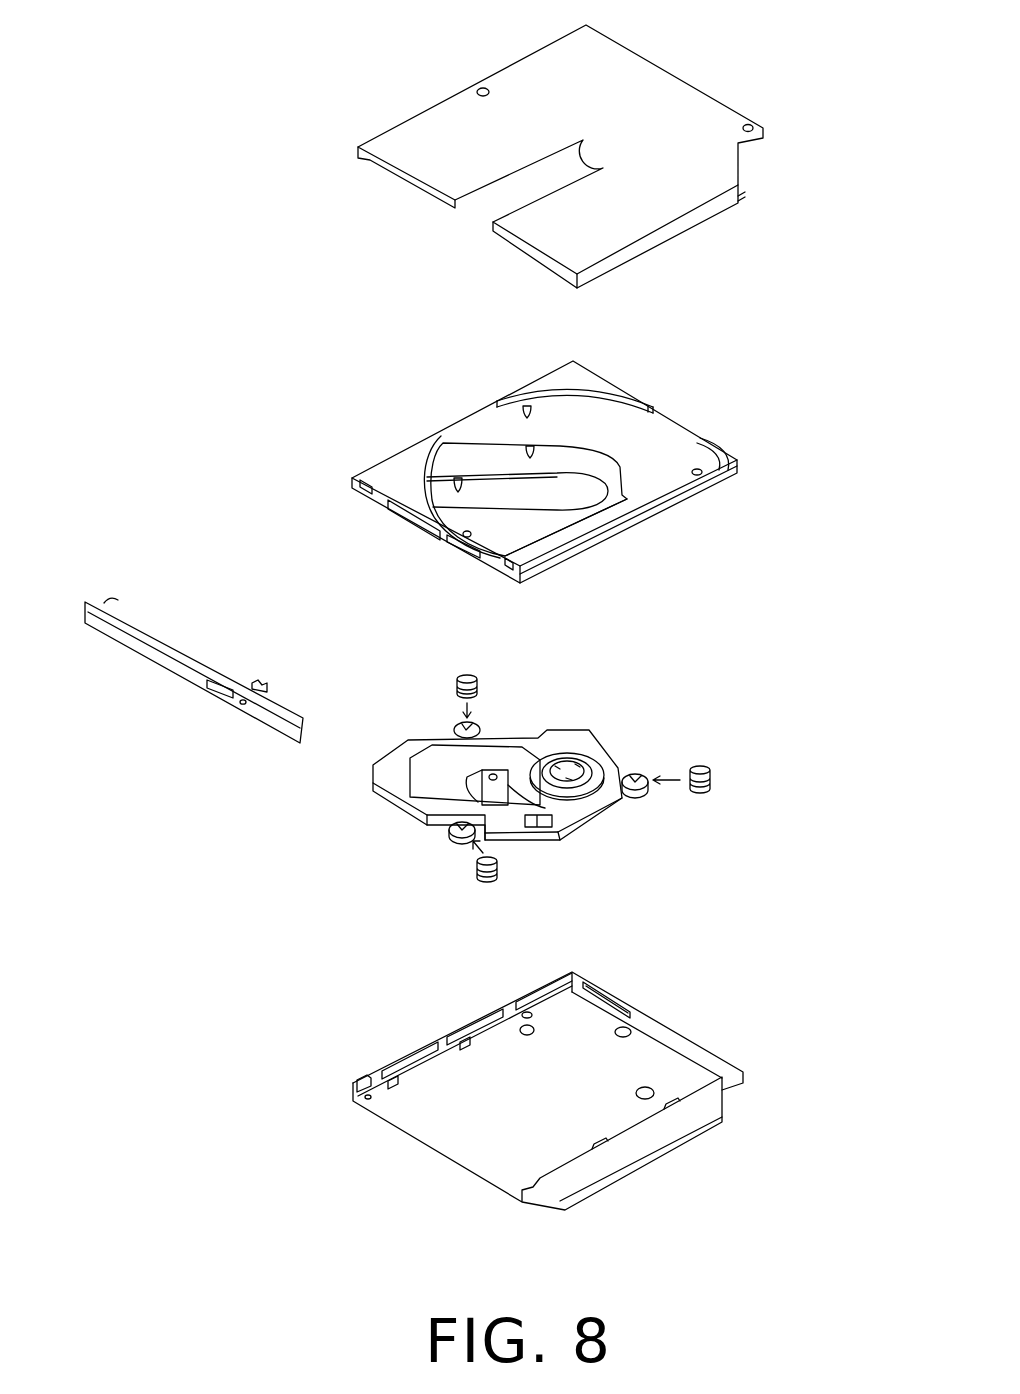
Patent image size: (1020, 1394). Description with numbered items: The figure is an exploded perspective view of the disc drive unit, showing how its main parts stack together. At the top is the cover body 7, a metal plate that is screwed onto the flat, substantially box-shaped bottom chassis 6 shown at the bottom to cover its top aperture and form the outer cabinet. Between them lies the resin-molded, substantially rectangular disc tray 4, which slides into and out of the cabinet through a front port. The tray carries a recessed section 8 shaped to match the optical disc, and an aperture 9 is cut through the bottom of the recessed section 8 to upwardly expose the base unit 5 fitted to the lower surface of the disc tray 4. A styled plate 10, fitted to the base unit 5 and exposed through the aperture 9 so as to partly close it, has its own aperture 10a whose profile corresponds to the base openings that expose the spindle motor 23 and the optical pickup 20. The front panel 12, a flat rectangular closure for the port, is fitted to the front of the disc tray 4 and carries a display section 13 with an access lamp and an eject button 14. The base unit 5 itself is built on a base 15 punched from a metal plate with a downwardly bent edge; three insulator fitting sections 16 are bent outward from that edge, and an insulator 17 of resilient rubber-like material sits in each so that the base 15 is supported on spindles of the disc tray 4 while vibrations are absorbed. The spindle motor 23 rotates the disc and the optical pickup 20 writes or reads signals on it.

The disc tray 4 is at (544, 455).
The base unit 5 is at (565, 764).
The bottom chassis 6 is at (665, 1020).
The cover body 7 is at (697, 113).
The recessed section 8 is at (525, 410).
The aperture 9 is at (528, 443).
The styled plate 10 is at (563, 523).
The aperture 10a is at (458, 470).
The front panel 12 is at (194, 701).
The display section 13 is at (207, 683).
The eject button 14 is at (227, 704).
The base 15 is at (555, 737).
The insulator fitting sections 16 is at (457, 730).
The insulator 17 is at (467, 674).
The optical pickup 20 is at (503, 767).
The spindle motor 23 is at (578, 757).